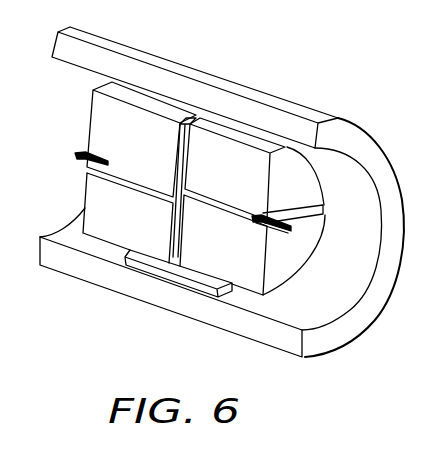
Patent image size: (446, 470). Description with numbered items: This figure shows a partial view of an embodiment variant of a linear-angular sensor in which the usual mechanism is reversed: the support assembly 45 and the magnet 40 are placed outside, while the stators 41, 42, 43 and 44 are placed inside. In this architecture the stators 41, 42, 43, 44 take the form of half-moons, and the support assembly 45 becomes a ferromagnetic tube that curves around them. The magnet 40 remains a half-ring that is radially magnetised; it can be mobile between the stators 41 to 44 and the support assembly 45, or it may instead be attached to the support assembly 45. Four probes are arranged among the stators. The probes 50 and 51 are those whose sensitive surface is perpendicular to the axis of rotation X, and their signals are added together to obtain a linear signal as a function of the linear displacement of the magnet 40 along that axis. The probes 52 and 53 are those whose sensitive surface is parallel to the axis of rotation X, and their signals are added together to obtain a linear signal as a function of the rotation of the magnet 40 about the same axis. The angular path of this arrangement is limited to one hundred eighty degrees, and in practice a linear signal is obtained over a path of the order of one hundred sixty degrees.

The magnet 40 is at (171, 282).
The stator 41 is at (148, 150).
The stator 42 is at (143, 225).
The stator 43 is at (220, 176).
The stator 44 is at (221, 253).
The support assembly 45 is at (364, 134).
The probe 50 is at (193, 120).
The probe 51 is at (167, 280).
The probe 52 is at (104, 171).
The probe 53 is at (241, 211).